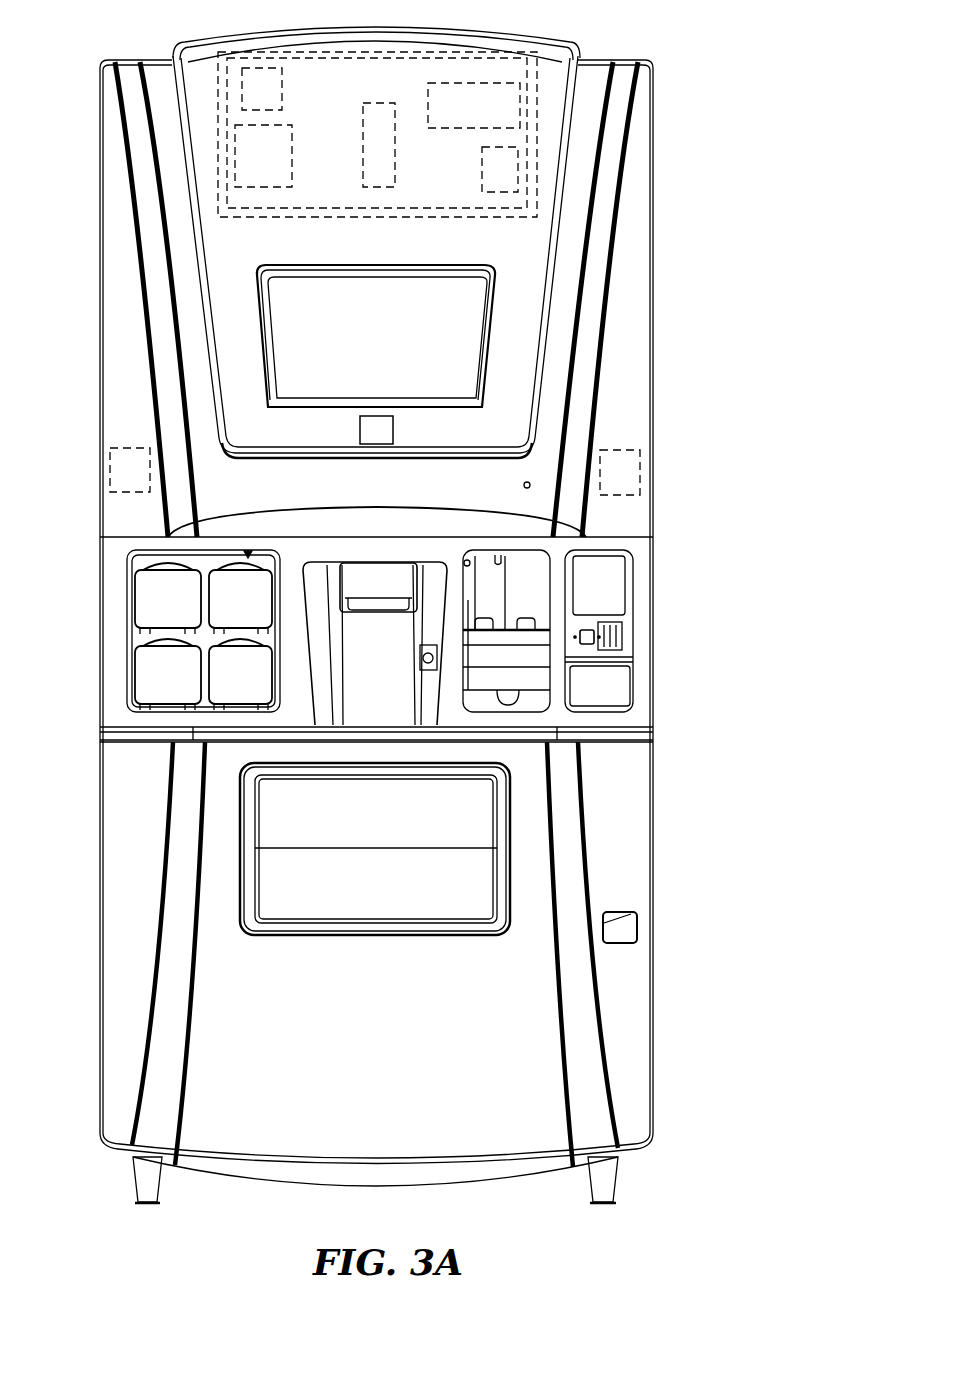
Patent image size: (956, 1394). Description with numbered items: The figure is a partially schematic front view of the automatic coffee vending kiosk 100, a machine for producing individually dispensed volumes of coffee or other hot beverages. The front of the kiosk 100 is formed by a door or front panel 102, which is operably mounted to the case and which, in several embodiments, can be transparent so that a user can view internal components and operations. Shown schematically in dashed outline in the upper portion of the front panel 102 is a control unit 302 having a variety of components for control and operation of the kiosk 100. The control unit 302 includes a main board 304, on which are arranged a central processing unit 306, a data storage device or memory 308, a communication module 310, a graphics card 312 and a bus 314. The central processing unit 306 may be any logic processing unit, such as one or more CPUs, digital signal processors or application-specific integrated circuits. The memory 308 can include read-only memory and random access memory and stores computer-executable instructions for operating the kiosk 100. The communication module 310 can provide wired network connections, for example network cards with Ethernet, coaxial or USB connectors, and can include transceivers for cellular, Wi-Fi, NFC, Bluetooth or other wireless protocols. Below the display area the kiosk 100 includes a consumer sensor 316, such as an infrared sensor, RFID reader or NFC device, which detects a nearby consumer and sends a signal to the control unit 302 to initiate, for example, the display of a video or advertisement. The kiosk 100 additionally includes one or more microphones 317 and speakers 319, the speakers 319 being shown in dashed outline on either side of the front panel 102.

The automatic coffee vending kiosk 100 is at (432, 615).
The door or front panel 102 is at (632, 396).
The control unit 302 is at (482, 218).
The main board 304 is at (447, 209).
The central processing unit (CPU) 306 is at (283, 92).
The data storage device or memory 308 is at (380, 189).
The communication module 310 is at (268, 189).
The graphics card 312 is at (482, 178).
The bus 314 is at (430, 102).
The consumer sensor 316 is at (395, 438).
The microphone 317 is at (520, 482).
The speakers 319 is at (110, 468).